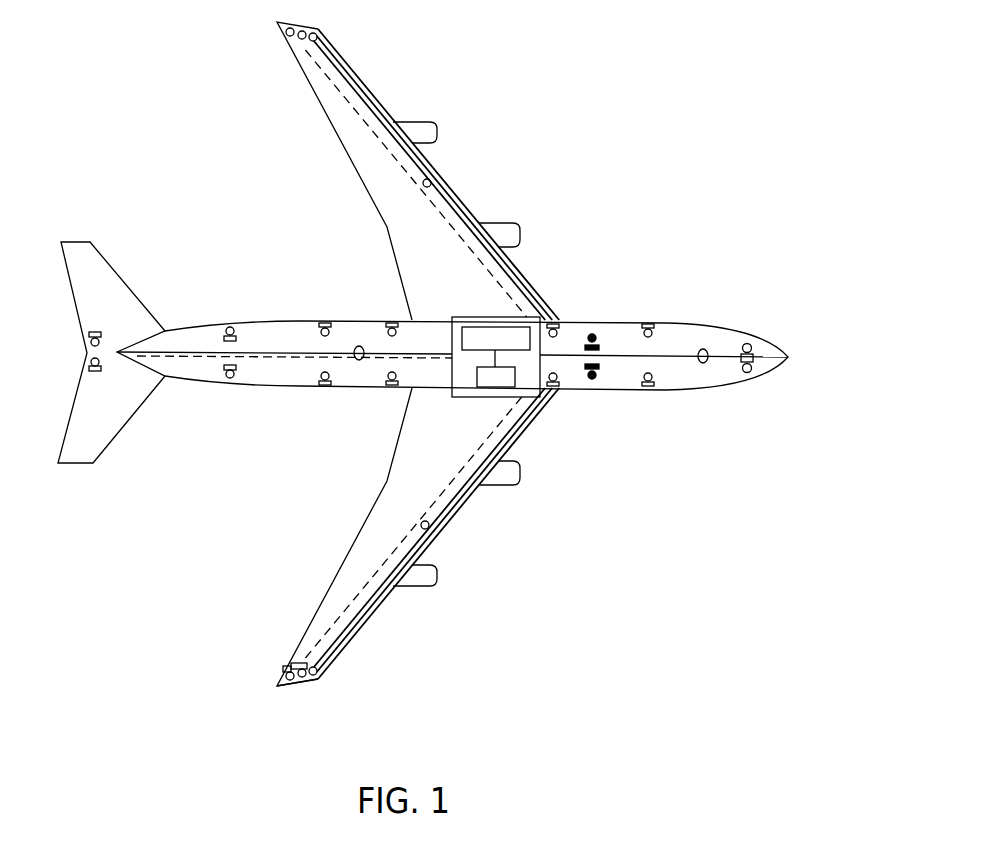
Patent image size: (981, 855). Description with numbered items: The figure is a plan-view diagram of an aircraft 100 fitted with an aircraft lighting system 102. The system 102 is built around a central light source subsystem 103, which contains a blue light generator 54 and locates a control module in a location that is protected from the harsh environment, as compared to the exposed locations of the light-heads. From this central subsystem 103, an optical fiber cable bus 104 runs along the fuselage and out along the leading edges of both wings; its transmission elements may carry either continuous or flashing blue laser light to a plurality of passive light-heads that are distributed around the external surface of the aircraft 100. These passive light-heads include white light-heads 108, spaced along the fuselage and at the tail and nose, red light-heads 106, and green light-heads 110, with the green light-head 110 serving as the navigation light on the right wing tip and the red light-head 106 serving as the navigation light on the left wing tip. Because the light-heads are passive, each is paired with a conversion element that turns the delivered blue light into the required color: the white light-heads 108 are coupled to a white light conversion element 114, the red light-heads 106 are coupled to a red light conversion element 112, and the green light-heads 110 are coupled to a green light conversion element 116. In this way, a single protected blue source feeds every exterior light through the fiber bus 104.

The blue light generator 54 is at (477, 375).
The aircraft 100 is at (461, 199).
The aircraft lighting system 102 is at (452, 333).
The central light source subsystem 103 is at (495, 327).
The optical fiber cable bus 104 is at (431, 180).
The red light-head 106 is at (590, 333).
The white light-head 108 is at (229, 328).
The green light-head 110 is at (278, 679).
The red light conversion element 112 is at (600, 347).
The white light conversion element 114 is at (237, 338).
The green light conversion element 116 is at (292, 666).